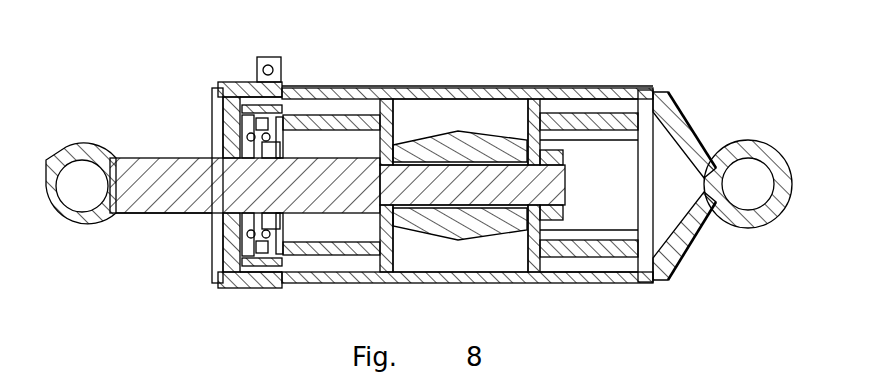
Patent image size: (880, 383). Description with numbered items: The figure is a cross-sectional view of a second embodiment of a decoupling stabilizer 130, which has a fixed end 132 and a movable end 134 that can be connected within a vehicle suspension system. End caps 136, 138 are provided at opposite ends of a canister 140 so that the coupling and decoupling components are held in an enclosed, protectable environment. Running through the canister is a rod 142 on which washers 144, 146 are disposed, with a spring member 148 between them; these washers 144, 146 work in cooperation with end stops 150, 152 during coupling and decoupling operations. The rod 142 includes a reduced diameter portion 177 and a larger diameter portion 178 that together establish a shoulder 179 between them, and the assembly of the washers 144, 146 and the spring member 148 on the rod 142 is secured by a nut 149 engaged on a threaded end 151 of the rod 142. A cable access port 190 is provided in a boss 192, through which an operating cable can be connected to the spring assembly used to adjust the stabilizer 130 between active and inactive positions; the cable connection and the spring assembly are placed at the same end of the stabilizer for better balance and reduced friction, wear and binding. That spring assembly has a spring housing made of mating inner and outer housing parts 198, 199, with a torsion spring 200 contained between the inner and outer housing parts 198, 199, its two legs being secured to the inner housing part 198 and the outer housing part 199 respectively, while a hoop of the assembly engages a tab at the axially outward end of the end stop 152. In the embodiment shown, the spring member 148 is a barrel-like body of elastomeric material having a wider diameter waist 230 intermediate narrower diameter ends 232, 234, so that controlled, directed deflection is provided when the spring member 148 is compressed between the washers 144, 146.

The decoupling stabilizer 130 is at (178, 62).
The fixed end 132 is at (755, 143).
The movable end 134 is at (87, 143).
The end cap 136 is at (670, 258).
The end cap 138 is at (232, 260).
The canister 140 is at (267, 290).
The rod 142 is at (107, 231).
The washer 144 is at (535, 99).
The washer 146 is at (390, 112).
The spring member 148 is at (443, 143).
The nut 149 is at (553, 153).
The end stop 150 is at (605, 248).
The threaded end 151 is at (565, 166).
The end stop 152 is at (350, 248).
The reduced diameter portion 177 is at (480, 180).
The larger diameter portion 178 is at (182, 200).
The shoulder 179 is at (365, 155).
The cable access port 190 is at (263, 60).
The boss 192 is at (270, 57).
The inner housing part 198 is at (266, 108).
The outer housing part 199 is at (238, 113).
The torsion spring 200 is at (245, 140).
The waist 230 is at (460, 240).
The end 232 is at (405, 225).
The end 234 is at (530, 272).